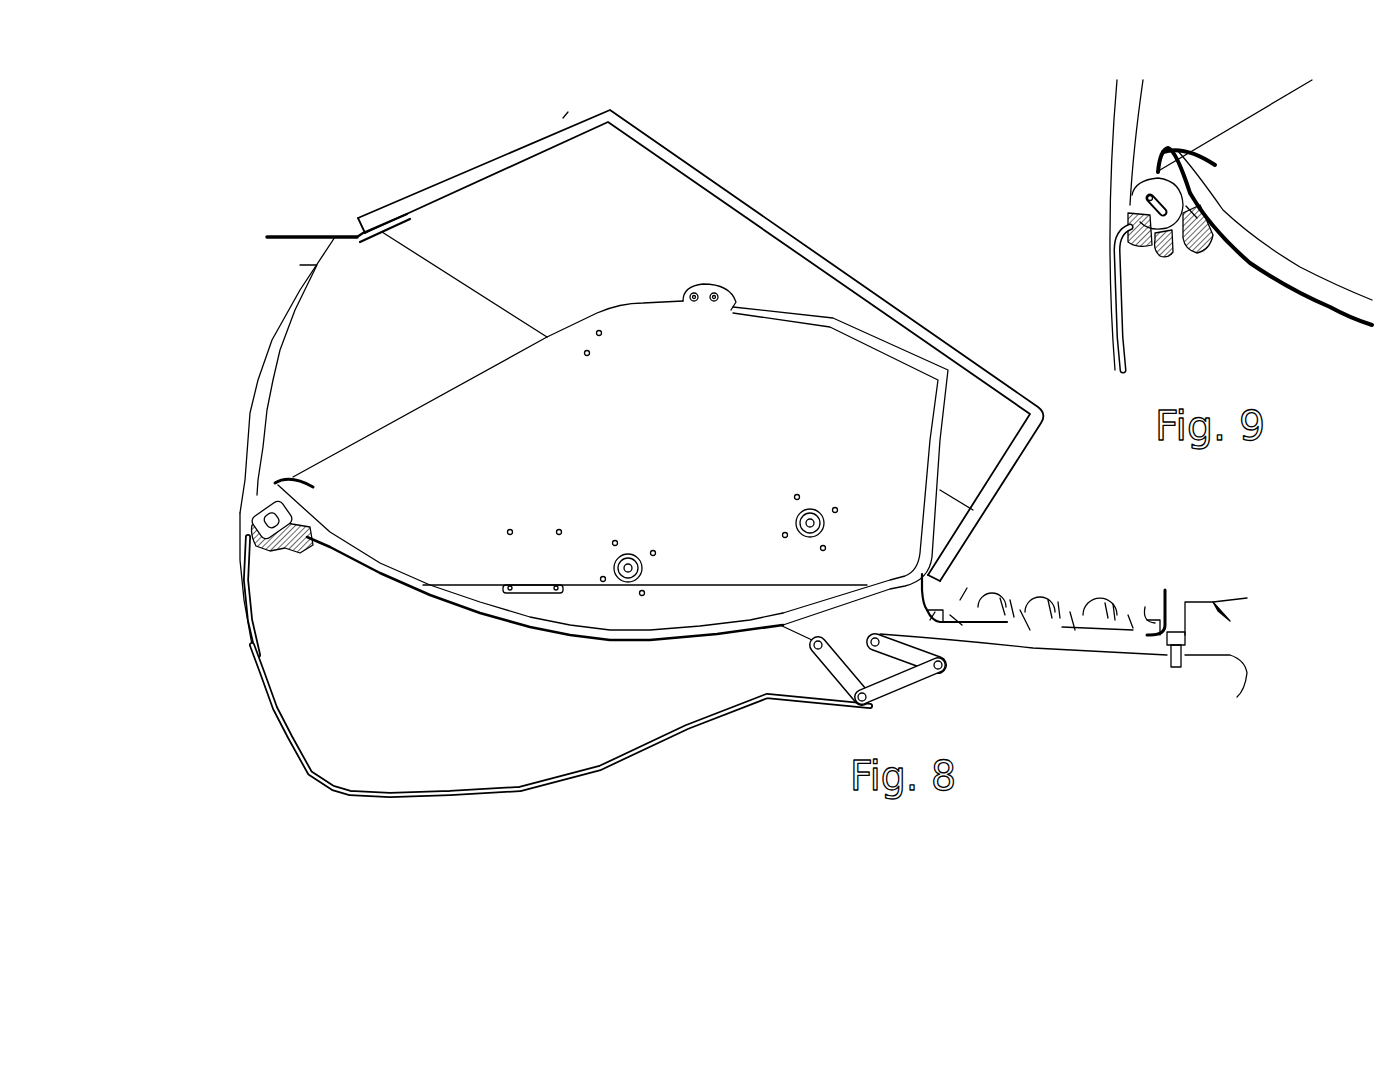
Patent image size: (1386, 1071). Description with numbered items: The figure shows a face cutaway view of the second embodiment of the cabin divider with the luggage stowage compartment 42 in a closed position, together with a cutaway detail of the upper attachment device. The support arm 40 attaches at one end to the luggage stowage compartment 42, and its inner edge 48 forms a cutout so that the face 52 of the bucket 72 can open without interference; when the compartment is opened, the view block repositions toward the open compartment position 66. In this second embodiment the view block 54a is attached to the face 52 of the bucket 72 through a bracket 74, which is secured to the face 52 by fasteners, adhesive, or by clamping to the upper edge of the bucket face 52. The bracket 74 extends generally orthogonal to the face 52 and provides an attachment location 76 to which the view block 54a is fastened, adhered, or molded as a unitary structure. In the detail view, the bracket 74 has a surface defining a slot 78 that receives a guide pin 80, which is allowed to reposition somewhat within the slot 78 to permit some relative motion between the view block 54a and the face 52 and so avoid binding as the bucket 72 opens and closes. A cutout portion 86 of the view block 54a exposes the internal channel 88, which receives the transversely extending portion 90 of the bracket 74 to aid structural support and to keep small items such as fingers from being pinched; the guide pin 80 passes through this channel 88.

In FIG. 8, the support arm 40 is at (285, 297).
In FIG. 9, the support arm 40 is at (1107, 118).
In FIG. 8, the luggage stowage compartment 42 is at (835, 262).
In FIG. 8, the inner edge 48 is at (250, 412).
In FIG. 9, the inner edge 48 is at (1127, 348).
In FIG. 8, the face 52 is at (467, 613).
In FIG. 9, the face 52 is at (1327, 303).
In FIG. 8, the view block 54a is at (487, 783).
In FIG. 9, the view block 54a is at (1195, 356).
In FIG. 8, the open compartment position 66 is at (222, 526).
In FIG. 8, the bucket 72 is at (417, 410).
In FIG. 9, the bucket 72 is at (1262, 98).
In FIG. 9, the bracket 74 is at (1140, 183).
In FIG. 9, the attachment location 76 is at (1168, 260).
In FIG. 9, the slot 78 is at (1148, 190).
In FIG. 9, the guide pin 80 is at (1145, 205).
In FIG. 9, the cutout portion 86 is at (1200, 250).
In FIG. 9, the internal channel 88 is at (1190, 217).
In FIG. 9, the transversely extending portion 90 is at (1145, 196).